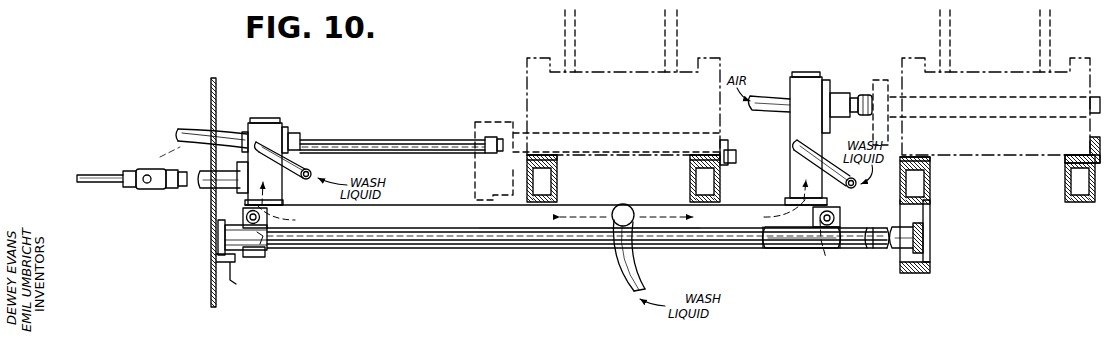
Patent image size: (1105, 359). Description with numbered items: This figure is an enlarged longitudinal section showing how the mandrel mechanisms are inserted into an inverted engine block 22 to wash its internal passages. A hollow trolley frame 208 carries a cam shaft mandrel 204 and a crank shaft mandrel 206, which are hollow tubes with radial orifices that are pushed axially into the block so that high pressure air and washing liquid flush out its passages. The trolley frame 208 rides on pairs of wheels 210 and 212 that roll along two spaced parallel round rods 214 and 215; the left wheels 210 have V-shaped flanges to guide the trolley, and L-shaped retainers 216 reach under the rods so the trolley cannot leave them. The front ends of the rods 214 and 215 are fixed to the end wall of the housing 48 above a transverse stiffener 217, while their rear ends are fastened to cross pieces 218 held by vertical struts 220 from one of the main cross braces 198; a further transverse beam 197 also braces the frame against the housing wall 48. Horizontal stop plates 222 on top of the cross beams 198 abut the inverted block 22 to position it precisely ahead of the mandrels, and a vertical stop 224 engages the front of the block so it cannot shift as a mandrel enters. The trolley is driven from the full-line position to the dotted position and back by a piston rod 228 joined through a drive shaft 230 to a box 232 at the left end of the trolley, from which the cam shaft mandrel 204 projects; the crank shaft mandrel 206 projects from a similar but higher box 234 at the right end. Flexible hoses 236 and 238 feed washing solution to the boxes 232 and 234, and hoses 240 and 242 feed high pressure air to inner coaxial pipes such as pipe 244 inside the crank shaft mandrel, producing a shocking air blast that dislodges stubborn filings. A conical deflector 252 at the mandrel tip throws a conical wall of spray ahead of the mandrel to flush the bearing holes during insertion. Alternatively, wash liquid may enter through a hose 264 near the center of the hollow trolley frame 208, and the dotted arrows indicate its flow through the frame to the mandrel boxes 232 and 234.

The block 22 is at (617, 72).
The housing wall 48 is at (216, 92).
The transverse beam 197 is at (558, 189).
The transverse beam 198 is at (689, 189).
The cam shaft mandrel 204 is at (385, 141).
The crank shaft mandrel 206 is at (847, 98).
The trolley frame 208 is at (425, 223).
The wheel 210 is at (827, 250).
The wheel 212 is at (262, 212).
The round rod 214 is at (486, 246).
The round rod 215 is at (218, 239).
The L-shaped retainer 216 is at (262, 256).
The transverse stiffener 217 is at (237, 275).
The cross piece 218 is at (931, 271).
The vertical strut 220 is at (926, 215).
The horizontal stop plate 222 is at (557, 158).
The vertical stop 224 is at (729, 158).
The piston rod 228 is at (95, 174).
The drive shaft 230 is at (162, 169).
The box 232 is at (260, 127).
The box 234 is at (808, 80).
The flexible hose 236 is at (313, 170).
The flexible hose 238 is at (828, 156).
The flexible hose 240 is at (196, 131).
The flexible hose 242 is at (768, 98).
The inner coaxial pipe 244 is at (1090, 152).
The conical deflector 252 is at (494, 136).
The hose 264 is at (641, 274).